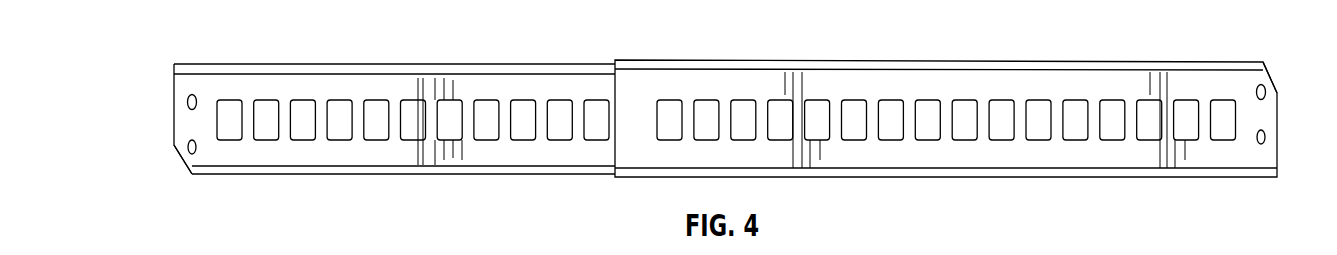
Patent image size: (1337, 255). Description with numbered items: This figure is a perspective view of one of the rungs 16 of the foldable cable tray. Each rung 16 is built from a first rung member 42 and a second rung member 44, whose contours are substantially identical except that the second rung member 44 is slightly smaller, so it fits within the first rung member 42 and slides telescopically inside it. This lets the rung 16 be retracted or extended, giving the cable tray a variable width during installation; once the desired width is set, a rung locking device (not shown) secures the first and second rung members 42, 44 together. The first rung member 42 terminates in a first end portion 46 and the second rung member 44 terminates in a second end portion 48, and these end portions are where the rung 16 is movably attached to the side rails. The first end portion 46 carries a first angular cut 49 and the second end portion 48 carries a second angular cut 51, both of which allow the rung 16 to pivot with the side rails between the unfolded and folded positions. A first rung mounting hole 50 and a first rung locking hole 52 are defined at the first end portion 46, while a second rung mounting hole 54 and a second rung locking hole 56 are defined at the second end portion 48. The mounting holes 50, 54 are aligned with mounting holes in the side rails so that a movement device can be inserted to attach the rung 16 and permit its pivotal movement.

The rung 16 is at (663, 29).
The first rung member 42 is at (953, 158).
The second rung member 44 is at (368, 155).
The first end portion 46 is at (1238, 162).
The second end portion 48 is at (220, 157).
The first angular cut 49 is at (1265, 62).
The first rung mounting hole 50 is at (1265, 92).
The second angular cut 51 is at (183, 160).
The first rung locking hole 52 is at (1265, 136).
The second rung mounting hole 54 is at (187, 146).
The second rung locking hole 56 is at (187, 101).